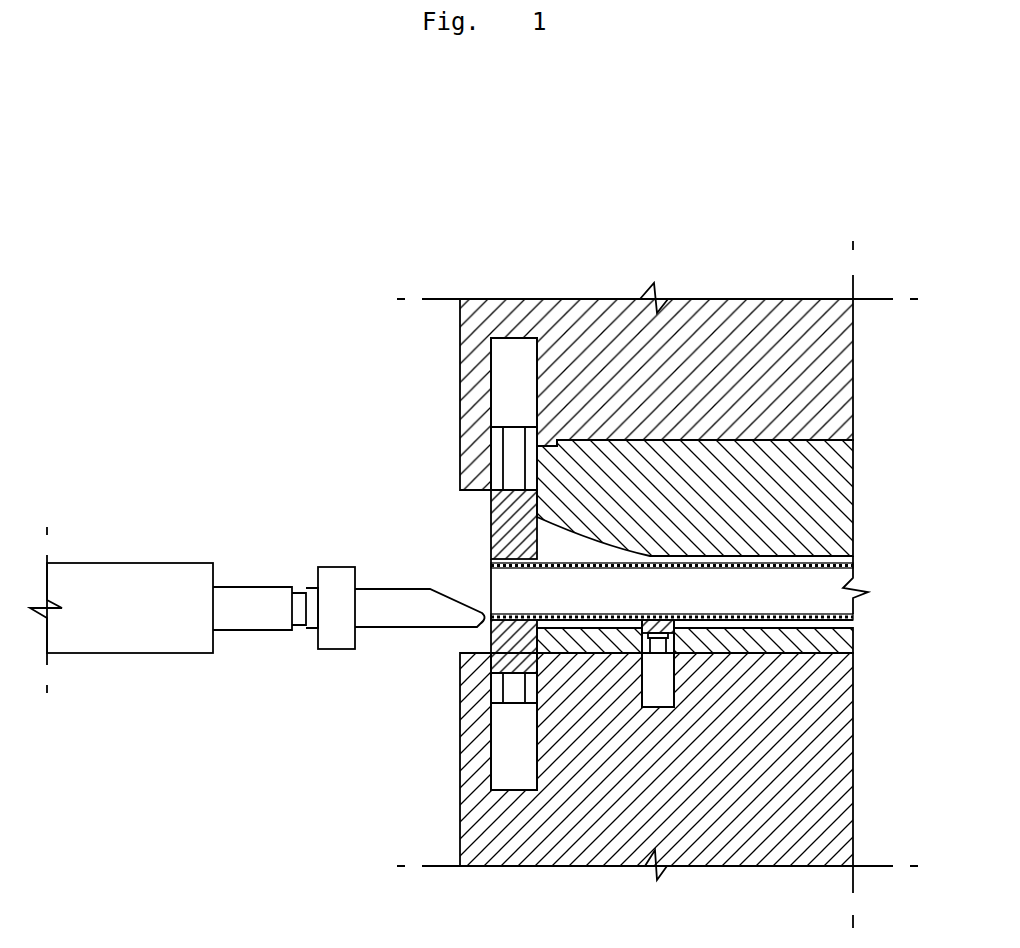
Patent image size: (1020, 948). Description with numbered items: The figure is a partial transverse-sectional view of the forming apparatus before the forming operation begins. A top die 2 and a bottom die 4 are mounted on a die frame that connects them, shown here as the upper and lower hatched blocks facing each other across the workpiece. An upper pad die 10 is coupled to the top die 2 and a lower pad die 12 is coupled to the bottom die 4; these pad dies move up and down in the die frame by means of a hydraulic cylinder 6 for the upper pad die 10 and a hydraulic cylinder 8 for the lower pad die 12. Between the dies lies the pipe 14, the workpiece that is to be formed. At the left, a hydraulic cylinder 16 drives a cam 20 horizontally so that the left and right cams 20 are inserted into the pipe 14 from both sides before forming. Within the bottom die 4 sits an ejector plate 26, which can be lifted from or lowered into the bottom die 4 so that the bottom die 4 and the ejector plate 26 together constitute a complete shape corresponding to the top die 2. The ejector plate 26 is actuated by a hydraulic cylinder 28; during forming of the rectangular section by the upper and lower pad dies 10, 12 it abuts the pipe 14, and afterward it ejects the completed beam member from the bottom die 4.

The top die 2 is at (825, 490).
The bottom die 4 is at (823, 783).
The hydraulic cylinder 6 is at (507, 387).
The hydraulic cylinder 8 is at (507, 770).
The upper pad die 10 is at (500, 535).
The lower pad die 12 is at (460, 655).
The pipe 14 is at (797, 612).
The hydraulic cylinder 16 is at (165, 583).
The cam 20 is at (400, 600).
The ejector plate 26 is at (674, 623).
The hydraulic cylinder 28 is at (662, 683).